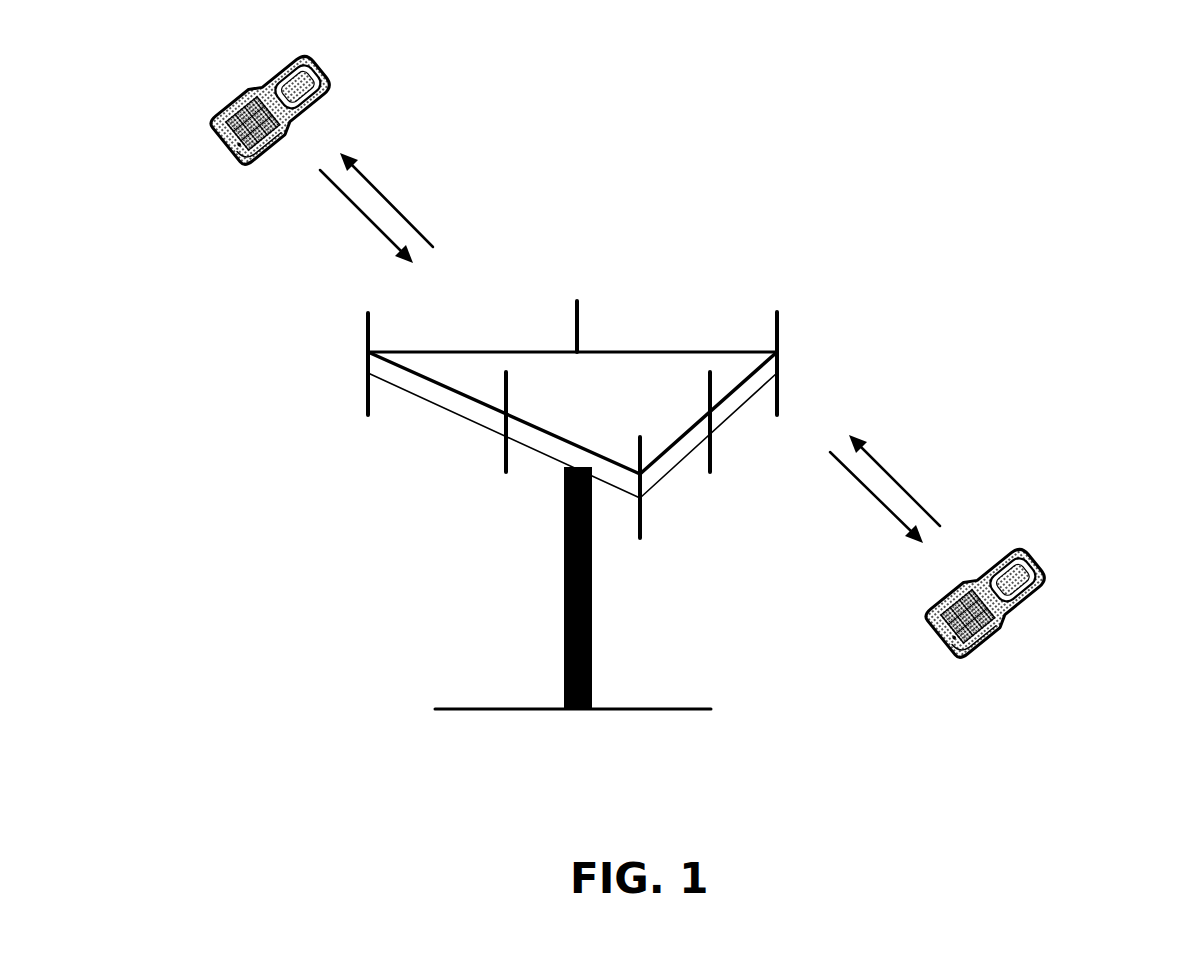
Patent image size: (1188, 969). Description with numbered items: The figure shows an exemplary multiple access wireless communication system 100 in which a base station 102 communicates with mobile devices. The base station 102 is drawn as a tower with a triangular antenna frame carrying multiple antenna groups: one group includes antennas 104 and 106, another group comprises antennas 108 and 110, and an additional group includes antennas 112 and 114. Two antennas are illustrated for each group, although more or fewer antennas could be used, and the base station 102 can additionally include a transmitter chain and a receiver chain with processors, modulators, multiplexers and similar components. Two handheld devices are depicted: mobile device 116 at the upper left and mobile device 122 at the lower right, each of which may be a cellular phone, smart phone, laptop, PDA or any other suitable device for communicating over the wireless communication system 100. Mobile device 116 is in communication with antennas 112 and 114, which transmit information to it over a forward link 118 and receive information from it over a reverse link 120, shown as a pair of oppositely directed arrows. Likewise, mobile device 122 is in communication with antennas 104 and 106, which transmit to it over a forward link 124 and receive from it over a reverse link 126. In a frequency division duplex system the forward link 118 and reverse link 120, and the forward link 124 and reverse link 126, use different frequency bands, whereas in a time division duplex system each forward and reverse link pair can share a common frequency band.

The wireless communication system 100 is at (1080, 133).
The base station 102 is at (590, 712).
The antenna 104 is at (777, 316).
The antenna 106 is at (711, 447).
The antenna 108 is at (641, 513).
The antenna 110 is at (505, 466).
The antenna 112 is at (368, 316).
The antenna 114 is at (577, 316).
The mobile device 116 is at (284, 62).
The forward link 118 is at (388, 200).
The reverse link 120 is at (377, 231).
The mobile device 122 is at (999, 556).
The forward link 124 is at (881, 505).
The reverse link 126 is at (891, 472).